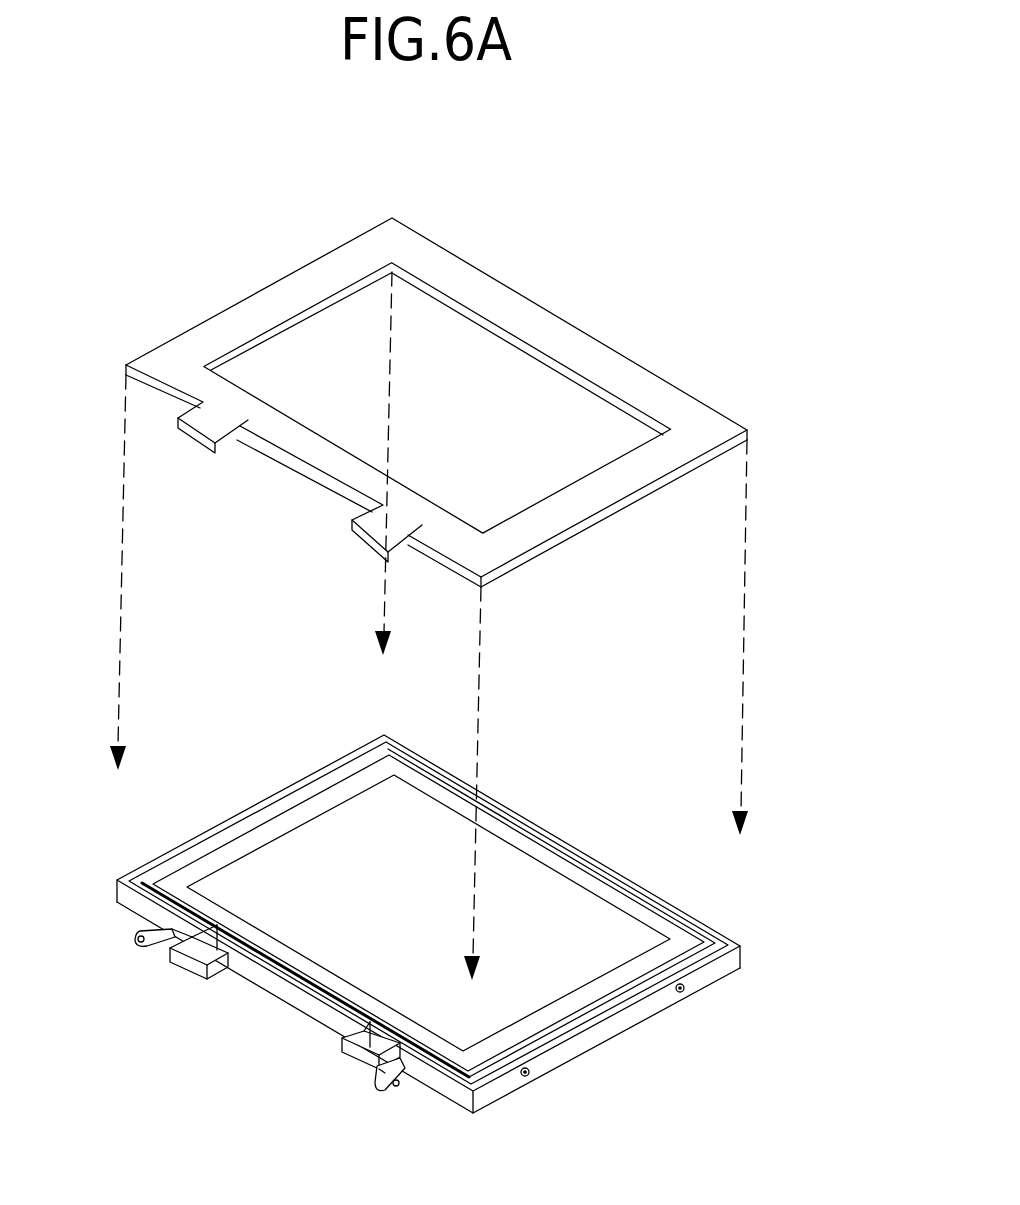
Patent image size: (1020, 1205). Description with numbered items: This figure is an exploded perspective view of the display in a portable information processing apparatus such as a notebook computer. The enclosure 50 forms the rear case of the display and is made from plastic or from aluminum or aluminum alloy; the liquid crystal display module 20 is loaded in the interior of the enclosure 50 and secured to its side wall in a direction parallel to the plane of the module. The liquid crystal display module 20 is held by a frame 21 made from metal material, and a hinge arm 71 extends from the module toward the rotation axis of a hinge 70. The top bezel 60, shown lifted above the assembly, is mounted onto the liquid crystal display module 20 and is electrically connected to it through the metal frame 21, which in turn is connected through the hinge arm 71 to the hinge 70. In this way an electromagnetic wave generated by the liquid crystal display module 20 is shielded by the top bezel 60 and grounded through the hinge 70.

The top bezel 60 is at (501, 280).
The enclosure 50 is at (741, 948).
The hinge arm 71 is at (603, 1012).
The frame 21 is at (647, 917).
The liquid crystal display module 20 is at (425, 921).
The hinge 70 is at (140, 938).